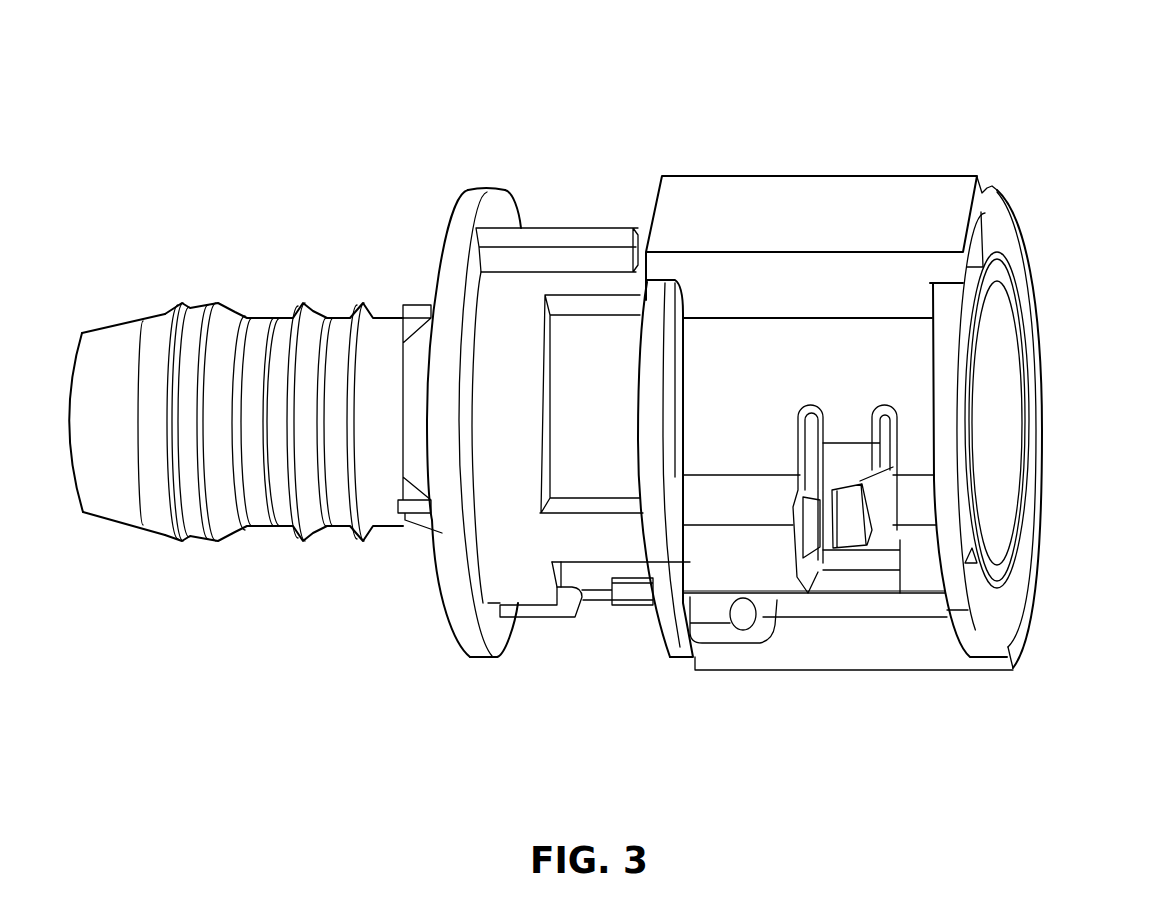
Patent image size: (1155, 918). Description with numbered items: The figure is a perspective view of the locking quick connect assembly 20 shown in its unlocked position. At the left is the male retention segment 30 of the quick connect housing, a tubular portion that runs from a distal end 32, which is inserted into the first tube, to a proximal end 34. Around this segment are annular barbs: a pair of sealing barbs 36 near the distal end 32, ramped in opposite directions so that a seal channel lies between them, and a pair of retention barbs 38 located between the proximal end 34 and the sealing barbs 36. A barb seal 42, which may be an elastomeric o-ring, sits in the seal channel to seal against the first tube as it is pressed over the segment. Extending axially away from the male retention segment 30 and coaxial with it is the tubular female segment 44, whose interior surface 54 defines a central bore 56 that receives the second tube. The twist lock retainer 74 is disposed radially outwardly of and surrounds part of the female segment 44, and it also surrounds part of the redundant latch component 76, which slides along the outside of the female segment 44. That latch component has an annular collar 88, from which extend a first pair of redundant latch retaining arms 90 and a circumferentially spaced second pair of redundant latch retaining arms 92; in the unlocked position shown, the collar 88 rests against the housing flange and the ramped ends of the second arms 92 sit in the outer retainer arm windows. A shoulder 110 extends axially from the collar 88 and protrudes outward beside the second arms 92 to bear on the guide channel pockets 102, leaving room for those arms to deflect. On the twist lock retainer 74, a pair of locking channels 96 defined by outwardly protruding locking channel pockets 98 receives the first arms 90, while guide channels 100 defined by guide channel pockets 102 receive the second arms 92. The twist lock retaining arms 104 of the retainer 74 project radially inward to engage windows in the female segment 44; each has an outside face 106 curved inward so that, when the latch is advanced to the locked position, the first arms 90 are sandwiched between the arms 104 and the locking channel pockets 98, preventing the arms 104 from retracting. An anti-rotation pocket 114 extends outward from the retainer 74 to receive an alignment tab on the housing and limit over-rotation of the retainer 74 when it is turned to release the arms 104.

The locking quick connect assembly 20 is at (1067, 68).
The male retention segment 30 is at (75, 707).
The distal end 32 is at (66, 336).
The proximal end 34 is at (422, 288).
The sealing barbs 36 is at (220, 300).
The retention barbs 38 is at (363, 300).
The barb seal 42 is at (205, 545).
The female segment 44 is at (578, 415).
The interior surface 54 is at (975, 529).
The central bore 56 is at (998, 399).
The twist lock retainer 74 is at (736, 395).
The redundant latch component 76 is at (544, 642).
The annular collar 88 is at (487, 190).
The first pair of redundant latch retaining arms 90 is at (622, 540).
The second pair of redundant latch retaining arms 92 is at (597, 287).
The locking channels 96 is at (1022, 309).
The locking channel pockets 98 is at (783, 553).
The guide channels 100 is at (1012, 583).
The guide channel pockets 102 is at (810, 200).
The twist lock retaining arms 104 is at (843, 457).
The outside face 106 is at (847, 518).
The shoulder 110 is at (540, 240).
The anti-rotation pocket 114 is at (727, 635).